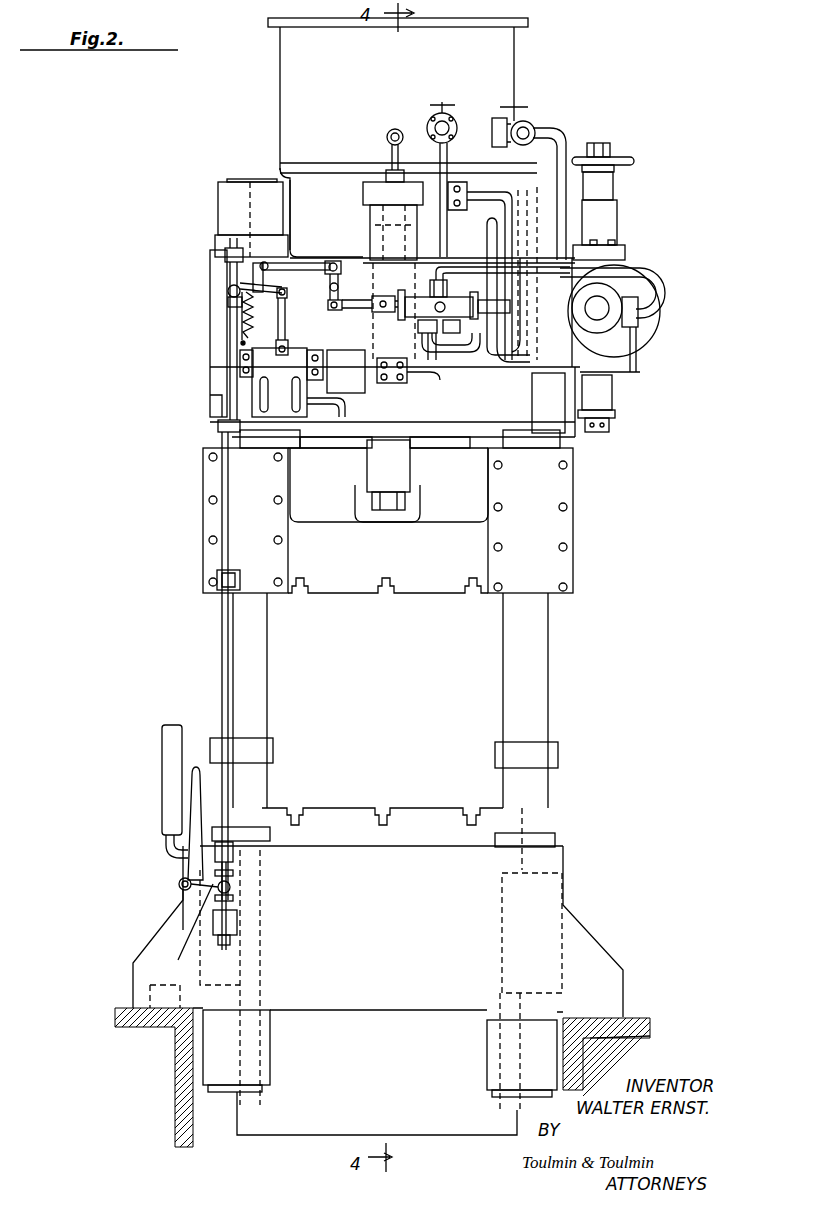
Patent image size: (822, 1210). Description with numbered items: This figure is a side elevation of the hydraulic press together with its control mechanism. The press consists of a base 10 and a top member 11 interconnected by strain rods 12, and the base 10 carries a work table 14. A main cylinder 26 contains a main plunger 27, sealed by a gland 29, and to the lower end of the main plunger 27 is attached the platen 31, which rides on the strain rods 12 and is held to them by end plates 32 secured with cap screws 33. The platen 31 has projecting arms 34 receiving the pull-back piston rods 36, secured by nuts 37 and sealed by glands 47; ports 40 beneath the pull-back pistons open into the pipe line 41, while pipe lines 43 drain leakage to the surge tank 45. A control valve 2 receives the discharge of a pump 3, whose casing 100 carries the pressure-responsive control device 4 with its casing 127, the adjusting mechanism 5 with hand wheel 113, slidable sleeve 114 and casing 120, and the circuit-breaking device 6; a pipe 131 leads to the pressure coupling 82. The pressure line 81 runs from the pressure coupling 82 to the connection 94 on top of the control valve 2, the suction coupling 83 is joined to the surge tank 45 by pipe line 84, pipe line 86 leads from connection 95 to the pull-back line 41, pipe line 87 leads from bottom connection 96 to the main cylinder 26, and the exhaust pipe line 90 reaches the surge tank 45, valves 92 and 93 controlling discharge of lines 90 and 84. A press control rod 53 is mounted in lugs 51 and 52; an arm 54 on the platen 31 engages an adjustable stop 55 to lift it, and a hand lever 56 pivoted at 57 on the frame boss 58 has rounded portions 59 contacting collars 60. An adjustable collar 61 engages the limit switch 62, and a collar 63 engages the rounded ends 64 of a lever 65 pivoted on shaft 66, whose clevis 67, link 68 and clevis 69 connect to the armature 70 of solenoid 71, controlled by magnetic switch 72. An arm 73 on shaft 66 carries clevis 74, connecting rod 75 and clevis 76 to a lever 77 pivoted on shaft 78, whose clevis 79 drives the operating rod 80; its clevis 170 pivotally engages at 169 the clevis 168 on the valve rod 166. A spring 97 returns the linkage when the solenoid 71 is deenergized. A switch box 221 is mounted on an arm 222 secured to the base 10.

The control valve 2 is at (503, 300).
The pump 3 is at (633, 264).
The pressure-responsive control device 4 is at (624, 404).
The adjusting mechanism 5 is at (628, 215).
The electrical circuit-breaking device 6 is at (608, 437).
The base 10 is at (553, 890).
The top member 11 is at (210, 356).
The strain rods 12 is at (262, 690).
The work table 14 is at (338, 815).
The main cylinder 26 is at (296, 178).
The main plunger 27 is at (440, 448).
The gland 29 is at (483, 445).
The platen 31 is at (412, 598).
The end plates 32 is at (288, 565).
The cap screws 33 is at (208, 540).
The arms 34 is at (370, 470).
The pull-back piston rods 36 is at (372, 448).
The nuts 37 is at (388, 505).
The ports 40 is at (407, 383).
The pipe line 41 is at (440, 380).
The pipe lines 43 is at (395, 129).
The surge tank 45 is at (514, 58).
The glands 47 is at (412, 450).
The lug 51 is at (225, 246).
The lug 52 is at (233, 850).
The press control rod 53 is at (222, 670).
The arm 54 is at (222, 592).
The adjustable stop 55 is at (217, 578).
The hand lever 56 is at (188, 868).
The pivot 57 is at (179, 885).
The frame boss 58 is at (183, 900).
The rounded portions 59 is at (200, 905).
The collars 60 is at (233, 898).
The adjustable collar 61 is at (218, 428).
The limit switch 62 is at (210, 407).
The collar 63 is at (228, 302).
The rounded ends 64 is at (228, 291).
The lever 65 is at (240, 285).
The shaft 66 is at (250, 312).
The clevis 67 is at (287, 297).
The link 68 is at (286, 325).
The clevis 69 is at (276, 345).
The armature 70 is at (272, 365).
The solenoid 71 is at (291, 400).
The magnetic switch 72 is at (328, 378).
The arm 73 is at (248, 270).
The clevis 74 is at (262, 258).
The connecting rod 75 is at (315, 263).
The clevis 76 is at (336, 262).
The lever 77 is at (340, 272).
The shaft 78 is at (330, 287).
The clevis 79 is at (331, 311).
The operating rod 80 is at (345, 330).
The pressure line 81 is at (660, 270).
The pressure coupling 82 is at (638, 318).
The suction coupling 83 is at (597, 333).
The pipe line 84 is at (566, 148).
The pipe line 86 is at (487, 250).
The pipe line 87 is at (484, 375).
The pipe line 90 is at (440, 165).
The valve 92 is at (452, 116).
The valve 93 is at (530, 122).
The connection 94 is at (447, 287).
The connection 95 is at (462, 330).
The bottom connection 96 is at (436, 360).
The spring 97 is at (240, 338).
The pump casing 100 is at (640, 340).
The hand wheel 113 is at (636, 161).
The slidable sleeve 114 is at (613, 193).
The casing 120 is at (617, 228).
The casing 127 is at (612, 398).
The pipe 131 is at (640, 375).
The valve rod 166 is at (396, 305).
The clevis 168 is at (380, 298).
The pivot 169 is at (380, 312).
The clevis 170 is at (360, 309).
The switch box 221 is at (180, 710).
The arm 222 is at (166, 850).